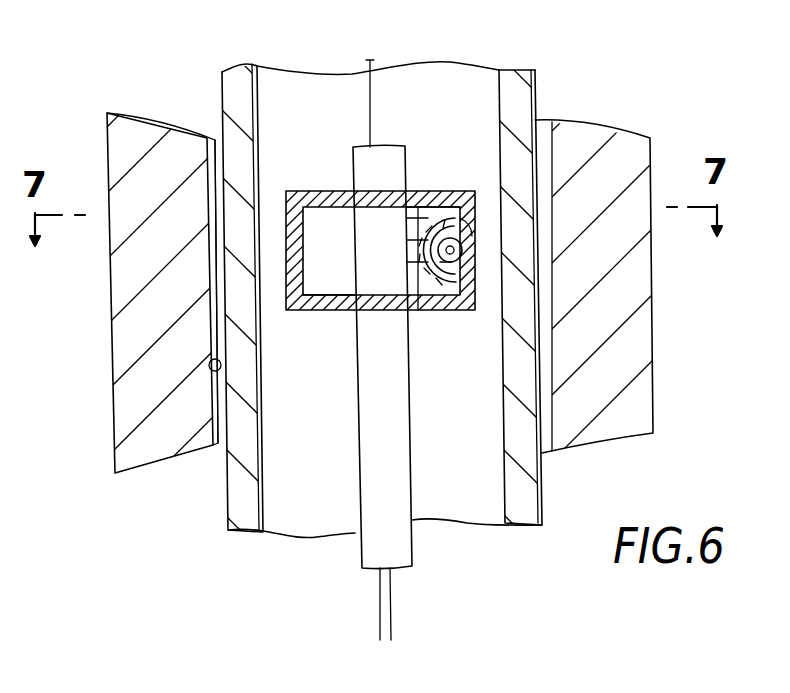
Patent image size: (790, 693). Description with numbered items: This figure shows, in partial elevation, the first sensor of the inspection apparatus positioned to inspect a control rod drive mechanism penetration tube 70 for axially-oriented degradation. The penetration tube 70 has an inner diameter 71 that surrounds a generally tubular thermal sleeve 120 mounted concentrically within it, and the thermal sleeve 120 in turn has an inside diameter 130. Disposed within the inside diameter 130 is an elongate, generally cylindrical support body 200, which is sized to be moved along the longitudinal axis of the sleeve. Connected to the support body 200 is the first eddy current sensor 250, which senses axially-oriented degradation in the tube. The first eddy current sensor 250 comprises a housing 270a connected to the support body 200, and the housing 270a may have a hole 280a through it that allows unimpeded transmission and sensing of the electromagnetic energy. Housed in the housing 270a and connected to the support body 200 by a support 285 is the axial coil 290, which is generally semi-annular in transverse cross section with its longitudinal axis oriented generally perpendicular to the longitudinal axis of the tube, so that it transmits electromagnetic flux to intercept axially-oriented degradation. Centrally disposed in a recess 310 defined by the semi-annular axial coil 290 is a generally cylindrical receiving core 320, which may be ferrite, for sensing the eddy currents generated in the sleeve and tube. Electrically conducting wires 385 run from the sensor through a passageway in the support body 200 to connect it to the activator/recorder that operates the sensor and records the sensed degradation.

The control rod drive mechanism penetration tube 70 is at (137, 331).
The inner diameter 71 is at (210, 373).
The thermal sleeve 120 is at (237, 92).
The inside diameter 130 is at (254, 80).
The support body 200 is at (358, 551).
The first eddy current sensor 250 is at (327, 190).
The housing 270a is at (333, 313).
The hole 280a is at (470, 232).
The support 285 is at (412, 200).
The axial coil 290 is at (455, 310).
The recess 310 is at (458, 240).
The receiving core 320 is at (462, 266).
The electrically conducting wires 385 is at (370, 65).